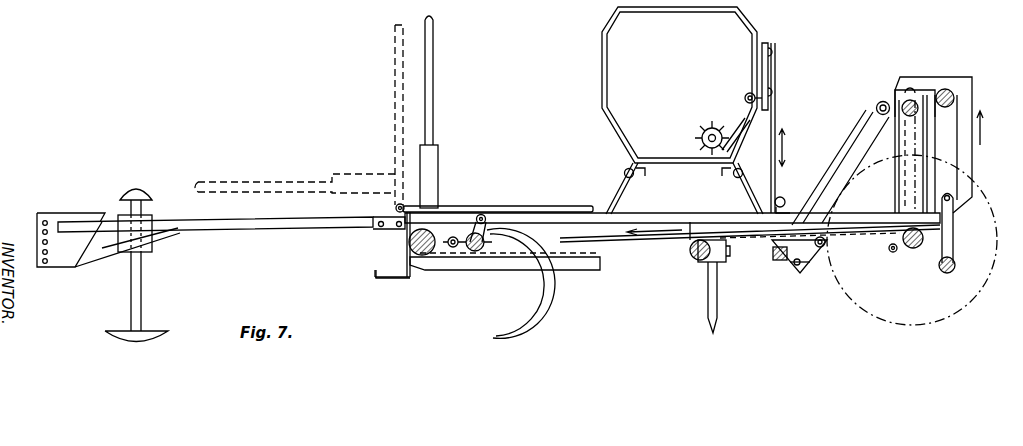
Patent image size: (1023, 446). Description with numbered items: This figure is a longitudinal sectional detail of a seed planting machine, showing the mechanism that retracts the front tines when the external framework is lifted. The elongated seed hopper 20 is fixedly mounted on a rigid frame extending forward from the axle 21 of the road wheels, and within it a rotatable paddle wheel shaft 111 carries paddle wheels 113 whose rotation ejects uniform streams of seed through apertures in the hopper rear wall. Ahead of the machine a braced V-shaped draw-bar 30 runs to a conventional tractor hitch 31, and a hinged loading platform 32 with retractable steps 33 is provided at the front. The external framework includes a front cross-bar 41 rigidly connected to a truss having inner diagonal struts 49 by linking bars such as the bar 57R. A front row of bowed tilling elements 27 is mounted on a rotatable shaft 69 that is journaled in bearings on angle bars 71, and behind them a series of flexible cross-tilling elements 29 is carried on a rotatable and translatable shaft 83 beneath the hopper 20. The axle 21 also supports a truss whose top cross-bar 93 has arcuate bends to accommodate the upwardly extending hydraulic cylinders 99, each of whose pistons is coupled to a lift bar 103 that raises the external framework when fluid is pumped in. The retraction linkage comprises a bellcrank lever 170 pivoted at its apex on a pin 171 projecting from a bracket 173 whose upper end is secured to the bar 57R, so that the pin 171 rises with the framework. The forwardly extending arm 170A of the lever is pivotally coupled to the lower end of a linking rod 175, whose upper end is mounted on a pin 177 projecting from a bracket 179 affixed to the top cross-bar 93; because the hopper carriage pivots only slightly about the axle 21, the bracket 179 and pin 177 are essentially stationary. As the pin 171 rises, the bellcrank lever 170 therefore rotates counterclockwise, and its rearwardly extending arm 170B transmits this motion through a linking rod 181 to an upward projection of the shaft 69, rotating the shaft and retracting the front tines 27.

The seed hopper 20 is at (674, 44).
The axle 21 is at (914, 250).
The tilling elements 27 is at (548, 295).
The cross-tilling elements 29 is at (708, 320).
The draw-bar 30 is at (235, 233).
The tractor hitch 31 is at (51, 213).
The loading platform 32 is at (545, 206).
The retractable steps 33 is at (396, 279).
The front cross-bar 41 is at (408, 250).
The inner diagonal struts 49 is at (953, 237).
The linking bar 57R is at (848, 222).
The rotatable shaft 69 is at (473, 252).
The angle bars 71 is at (600, 264).
The shaft 83 is at (700, 263).
The top cross-bar 93 is at (900, 119).
The hydraulic cylinders 99 is at (906, 158).
The lift bar 103 is at (953, 80).
The paddle wheel shaft 111 is at (701, 139).
The paddle wheels 113 is at (712, 121).
The bellcrank lever 170 is at (833, 299).
The forwardly extending arm 170A is at (778, 250).
The rearwardly extending arm 170B is at (823, 247).
The pin 171 is at (796, 266).
The bracket 173 is at (803, 284).
The linking rod 175 is at (843, 152).
The pin 177 is at (876, 109).
The bracket 179 is at (893, 100).
The linking rod 181 is at (673, 242).